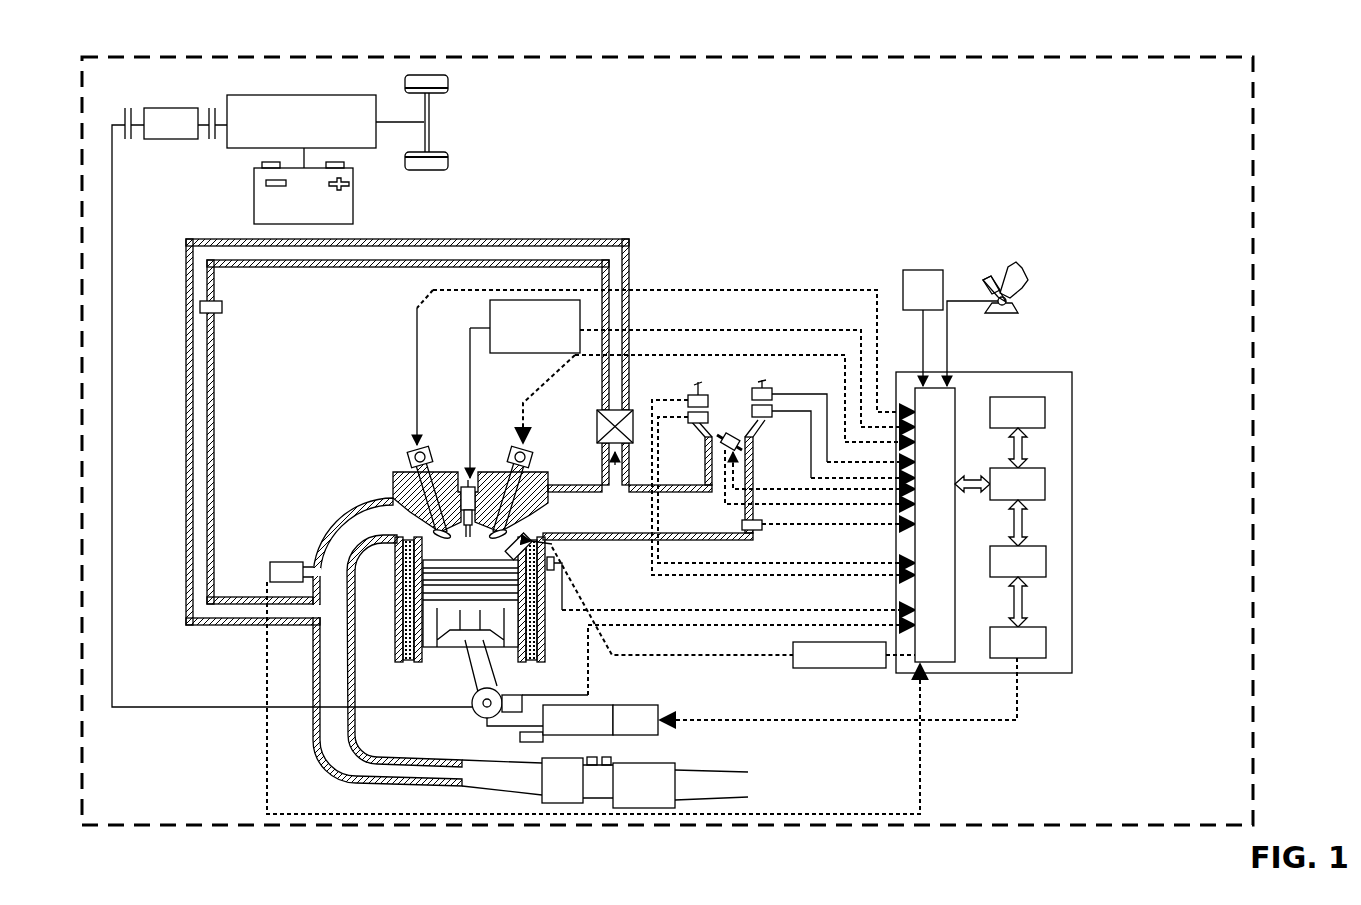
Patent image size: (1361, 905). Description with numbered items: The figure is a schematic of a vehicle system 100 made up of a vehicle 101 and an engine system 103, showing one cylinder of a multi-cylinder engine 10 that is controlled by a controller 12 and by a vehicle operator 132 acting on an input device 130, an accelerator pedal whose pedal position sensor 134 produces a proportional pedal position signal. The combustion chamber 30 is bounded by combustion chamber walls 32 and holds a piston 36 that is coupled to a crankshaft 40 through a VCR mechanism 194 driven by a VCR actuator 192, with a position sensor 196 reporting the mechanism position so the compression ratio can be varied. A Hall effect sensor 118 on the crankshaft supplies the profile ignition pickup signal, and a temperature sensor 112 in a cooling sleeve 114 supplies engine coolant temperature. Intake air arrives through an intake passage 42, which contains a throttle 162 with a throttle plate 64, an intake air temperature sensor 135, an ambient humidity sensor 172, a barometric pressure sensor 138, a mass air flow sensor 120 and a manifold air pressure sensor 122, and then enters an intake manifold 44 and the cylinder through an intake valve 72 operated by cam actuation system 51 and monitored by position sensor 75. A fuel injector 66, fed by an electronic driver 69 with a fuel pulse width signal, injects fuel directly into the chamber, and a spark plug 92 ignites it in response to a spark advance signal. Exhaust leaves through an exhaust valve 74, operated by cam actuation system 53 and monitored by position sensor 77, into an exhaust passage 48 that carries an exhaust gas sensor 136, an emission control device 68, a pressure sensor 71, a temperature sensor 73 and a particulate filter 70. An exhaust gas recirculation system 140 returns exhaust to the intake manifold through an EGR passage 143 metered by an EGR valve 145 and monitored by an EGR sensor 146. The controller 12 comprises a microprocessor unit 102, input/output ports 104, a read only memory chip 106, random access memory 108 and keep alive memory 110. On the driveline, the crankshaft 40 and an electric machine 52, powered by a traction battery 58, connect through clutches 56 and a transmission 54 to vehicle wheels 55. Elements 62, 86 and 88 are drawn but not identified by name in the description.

The vehicle system 100 is at (1272, 92).
The vehicle 101 is at (1254, 490).
The engine system 103 is at (828, 248).
The engine 10 is at (342, 432).
The controller 12 is at (1072, 378).
The combustion chamber 30 is at (396, 632).
The combustion chamber walls 32 is at (420, 662).
The piston 36 is at (456, 640).
The crankshaft 40 is at (480, 716).
The intake passage 42 is at (802, 472).
The intake manifold 44 is at (648, 512).
The exhaust passage 48 is at (387, 642).
The cam actuation system 51 is at (514, 448).
The electric machine 52 is at (172, 139).
The cam actuation system 53 is at (426, 448).
The transmission 54 is at (357, 148).
The vehicle wheels 55 is at (430, 171).
The clutch 56 is at (125, 110).
The traction battery 58 is at (353, 202).
The throttle actuator 62 is at (923, 328).
The throttle plate 64 is at (717, 438).
The fuel injector 66 is at (552, 540).
The emission control device 68 is at (562, 780).
The electronic driver 69 is at (830, 668).
The particulate filter 70 is at (644, 785).
The pressure sensor 71 is at (590, 757).
The intake valve 72 is at (508, 530).
The temperature sensor 73 is at (607, 757).
The exhaust valve 74 is at (430, 522).
The position sensor 75 is at (532, 462).
The position sensor 77 is at (412, 452).
The tailpipe 86 is at (705, 770).
The ignition system 88 is at (650, 330).
The spark plug 92 is at (470, 480).
The microprocessor unit 102 is at (1045, 482).
The input/output ports 104 is at (955, 400).
The read only memory chip 106 is at (1045, 410).
The random access memory 108 is at (1046, 560).
The keep alive memory 110 is at (1046, 640).
The temperature sensor 112 is at (552, 571).
The cooling sleeve 114 is at (532, 632).
The Hall effect sensor 118 is at (520, 700).
The mass air flow sensor 120 is at (758, 388).
The manifold air pressure sensor 122 is at (758, 530).
The input device 130 is at (988, 282).
The vehicle operator 132 is at (1030, 275).
The pedal position sensor 134 is at (1018, 305).
The intake air temperature sensor 135 is at (752, 410).
The exhaust gas sensor 136 is at (270, 568).
The barometric pressure sensor 138 is at (688, 400).
The exhaust gas recirculation system 140 is at (514, 237).
The EGR passage 143 is at (400, 240).
The EGR valve 145 is at (597, 428).
The EGR sensor 146 is at (212, 313).
The throttle 162 is at (742, 448).
The ambient humidity sensor 172 is at (688, 418).
The VCR actuator 192 is at (815, 696).
The VCR mechanism 194 is at (578, 720).
The position sensor 196 is at (520, 738).